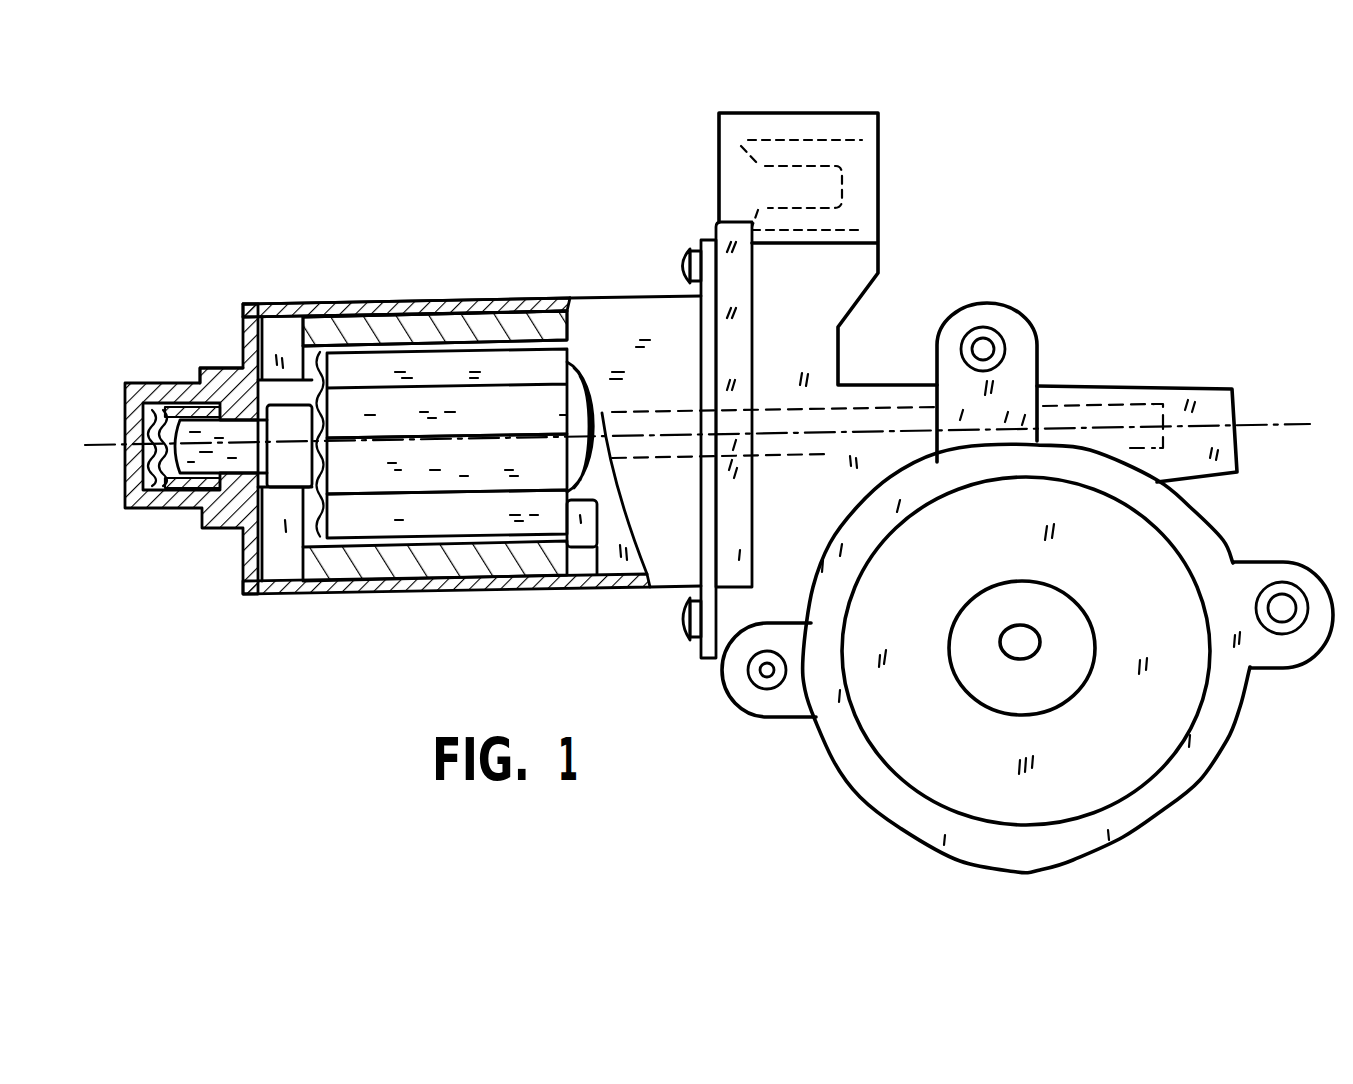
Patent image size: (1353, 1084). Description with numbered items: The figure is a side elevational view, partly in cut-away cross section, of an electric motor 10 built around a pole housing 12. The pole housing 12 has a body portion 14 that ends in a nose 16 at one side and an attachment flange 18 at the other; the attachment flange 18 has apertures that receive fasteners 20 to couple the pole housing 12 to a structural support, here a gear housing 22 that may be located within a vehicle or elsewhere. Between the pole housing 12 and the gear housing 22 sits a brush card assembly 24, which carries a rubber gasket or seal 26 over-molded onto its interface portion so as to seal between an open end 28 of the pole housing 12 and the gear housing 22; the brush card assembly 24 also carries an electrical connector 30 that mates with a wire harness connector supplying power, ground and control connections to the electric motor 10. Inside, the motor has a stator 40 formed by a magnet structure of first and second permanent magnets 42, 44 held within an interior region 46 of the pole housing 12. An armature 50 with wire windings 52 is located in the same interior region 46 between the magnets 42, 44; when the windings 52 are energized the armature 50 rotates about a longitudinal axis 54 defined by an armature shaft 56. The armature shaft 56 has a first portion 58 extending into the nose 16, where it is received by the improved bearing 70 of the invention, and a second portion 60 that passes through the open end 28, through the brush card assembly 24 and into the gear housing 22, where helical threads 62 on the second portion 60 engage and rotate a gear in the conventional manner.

The electric motor 10 is at (1107, 212).
The pole housing 12 is at (369, 292).
The body portion 14 is at (456, 308).
The nose 16 is at (173, 380).
The attachment flange 18 is at (706, 657).
The fasteners 20 is at (679, 268).
The gear housing 22 is at (1114, 742).
The brush card assembly 24 is at (892, 187).
The seal 26 is at (728, 340).
The open end 28 is at (699, 510).
The electrical connector 30 is at (836, 215).
The stator 40 is at (341, 331).
The first permanent magnet 42 is at (408, 332).
The second permanent magnet 44 is at (446, 558).
The interior region 46 is at (284, 508).
The armature 50 is at (479, 470).
The wire windings 52 is at (603, 412).
The longitudinal axis 54 is at (1268, 422).
The armature shaft 56 is at (255, 464).
The first portion 58 is at (209, 447).
The second portion 60 is at (1134, 404).
The helical threads 62 is at (1048, 402).
The bearing 70 is at (204, 374).